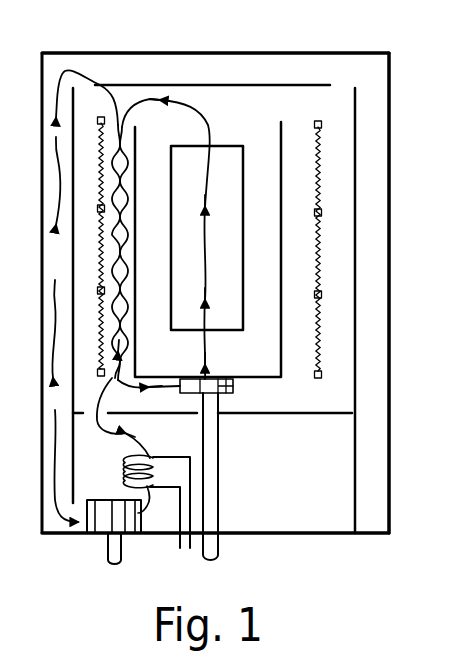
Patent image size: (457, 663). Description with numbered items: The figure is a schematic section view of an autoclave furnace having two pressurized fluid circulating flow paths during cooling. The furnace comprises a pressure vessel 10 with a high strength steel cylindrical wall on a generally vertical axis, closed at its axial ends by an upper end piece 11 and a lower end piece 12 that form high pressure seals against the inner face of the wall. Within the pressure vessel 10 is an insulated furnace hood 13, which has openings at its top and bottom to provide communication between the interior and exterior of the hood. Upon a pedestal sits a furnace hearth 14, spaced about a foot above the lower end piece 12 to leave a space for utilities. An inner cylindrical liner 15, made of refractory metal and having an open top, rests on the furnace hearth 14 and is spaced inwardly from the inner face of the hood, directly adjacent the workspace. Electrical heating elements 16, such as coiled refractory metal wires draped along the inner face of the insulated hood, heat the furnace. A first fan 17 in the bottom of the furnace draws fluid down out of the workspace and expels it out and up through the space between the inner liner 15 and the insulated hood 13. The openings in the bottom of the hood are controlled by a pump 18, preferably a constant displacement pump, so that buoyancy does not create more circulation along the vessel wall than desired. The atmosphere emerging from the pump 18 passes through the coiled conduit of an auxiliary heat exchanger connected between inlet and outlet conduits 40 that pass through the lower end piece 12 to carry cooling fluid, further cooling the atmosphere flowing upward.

The pressure vessel 10 is at (389, 242).
The upper end piece 11 is at (243, 52).
The lower end piece 12 is at (287, 536).
The insulated furnace hood 13 is at (389, 108).
The furnace hearth 14 is at (253, 376).
The inner cylindrical liner 15 is at (283, 238).
The electrical heating elements 16 is at (100, 163).
The first fan 17 is at (233, 386).
The pump 18 is at (100, 534).
The inlet and outlet conduits 40 is at (158, 457).